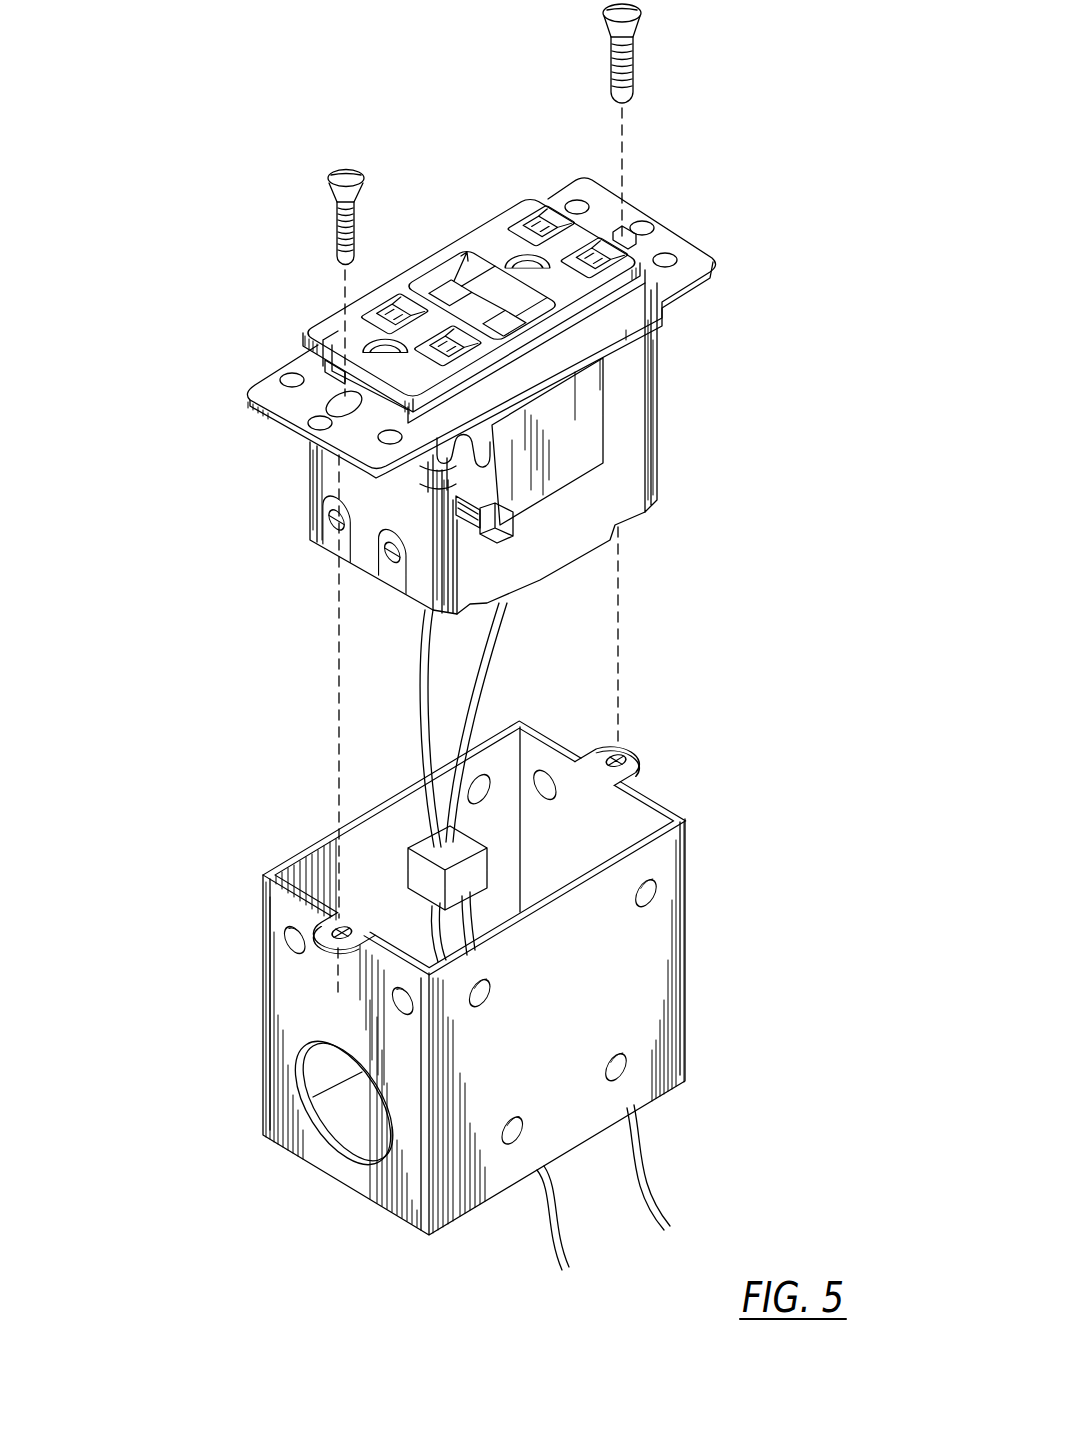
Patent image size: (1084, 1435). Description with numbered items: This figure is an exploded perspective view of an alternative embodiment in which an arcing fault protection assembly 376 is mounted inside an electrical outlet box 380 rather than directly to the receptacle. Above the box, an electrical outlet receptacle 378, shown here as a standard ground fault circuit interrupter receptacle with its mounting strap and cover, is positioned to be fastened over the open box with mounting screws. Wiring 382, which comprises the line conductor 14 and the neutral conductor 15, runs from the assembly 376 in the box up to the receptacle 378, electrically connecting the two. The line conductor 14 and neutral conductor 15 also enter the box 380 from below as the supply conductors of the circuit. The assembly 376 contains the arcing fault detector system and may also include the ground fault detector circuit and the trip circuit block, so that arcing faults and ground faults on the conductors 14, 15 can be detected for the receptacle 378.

The electrical outlet receptacle 378 is at (641, 404).
The wiring 382 is at (493, 653).
The arcing fault protection assembly 376 is at (477, 863).
The electrical outlet box 380 is at (668, 850).
The line conductor 14 is at (647, 1177).
The neutral conductor 15 is at (550, 1240).